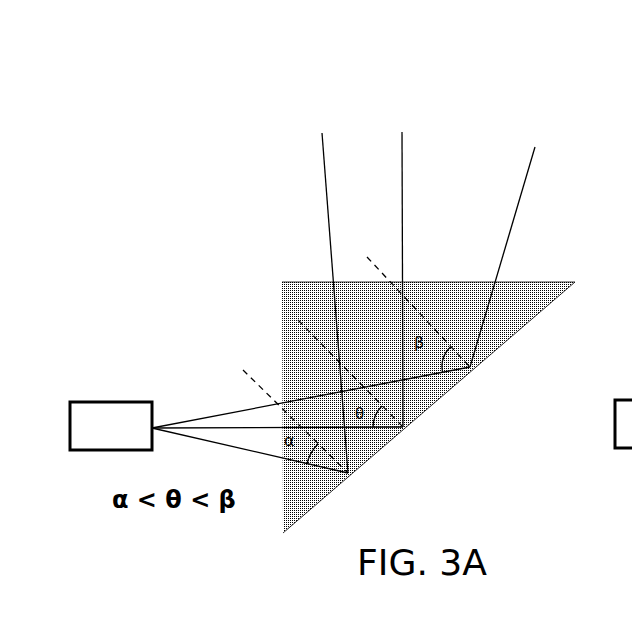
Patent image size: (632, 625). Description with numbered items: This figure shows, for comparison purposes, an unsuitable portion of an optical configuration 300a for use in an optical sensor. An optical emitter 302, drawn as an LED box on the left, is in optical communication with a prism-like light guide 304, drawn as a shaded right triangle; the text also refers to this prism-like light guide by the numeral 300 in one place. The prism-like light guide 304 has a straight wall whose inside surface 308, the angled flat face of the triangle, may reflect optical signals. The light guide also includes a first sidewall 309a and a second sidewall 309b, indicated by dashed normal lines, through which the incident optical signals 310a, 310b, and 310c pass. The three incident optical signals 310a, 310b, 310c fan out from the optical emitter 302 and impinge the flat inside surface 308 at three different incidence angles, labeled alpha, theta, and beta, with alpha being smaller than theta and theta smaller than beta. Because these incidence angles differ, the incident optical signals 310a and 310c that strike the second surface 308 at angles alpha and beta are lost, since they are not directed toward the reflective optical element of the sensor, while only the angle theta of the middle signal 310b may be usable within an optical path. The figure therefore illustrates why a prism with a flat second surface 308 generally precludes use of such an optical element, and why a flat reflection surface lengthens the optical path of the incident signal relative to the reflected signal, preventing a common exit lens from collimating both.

The optical configuration 300a is at (460, 72).
The optical element (prism) 300 is at (527, 322).
The optical emitter 302 is at (120, 401).
The prism-like light guide 304 is at (527, 282).
The inside surface 308 is at (312, 493).
The first sidewall 309a is at (283, 335).
The second sidewall 309b is at (305, 282).
The incident optical signal 310a is at (213, 443).
The incident optical signal 310b is at (203, 430).
The incident optical signal 310c is at (230, 411).